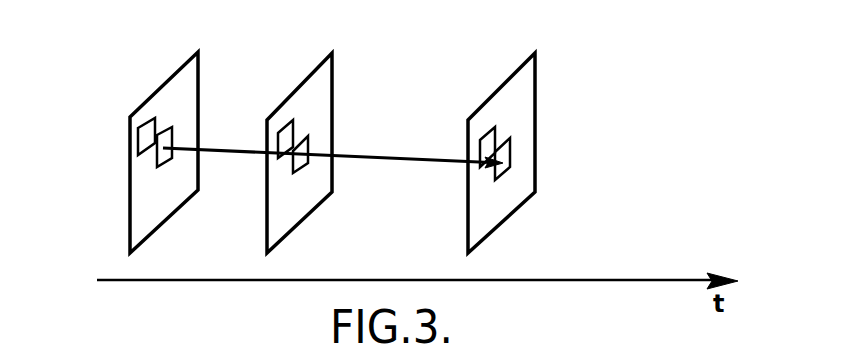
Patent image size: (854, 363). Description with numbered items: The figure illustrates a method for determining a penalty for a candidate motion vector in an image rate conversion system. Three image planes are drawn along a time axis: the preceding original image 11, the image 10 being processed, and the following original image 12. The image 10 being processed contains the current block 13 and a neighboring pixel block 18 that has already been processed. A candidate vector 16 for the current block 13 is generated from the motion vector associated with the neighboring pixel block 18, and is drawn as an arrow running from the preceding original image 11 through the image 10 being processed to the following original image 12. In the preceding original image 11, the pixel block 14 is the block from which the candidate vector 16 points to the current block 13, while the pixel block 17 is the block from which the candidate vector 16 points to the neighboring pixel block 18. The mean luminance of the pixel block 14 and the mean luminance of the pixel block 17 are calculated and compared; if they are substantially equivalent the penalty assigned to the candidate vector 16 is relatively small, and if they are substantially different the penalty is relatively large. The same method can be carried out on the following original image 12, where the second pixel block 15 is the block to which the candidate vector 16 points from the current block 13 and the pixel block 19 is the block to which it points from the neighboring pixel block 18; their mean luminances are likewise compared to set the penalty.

The image being processed 10 is at (295, 85).
The preceding original image 11 is at (160, 88).
The following original image 12 is at (503, 82).
The current block 13 is at (308, 145).
The first pixel block 14 is at (157, 162).
The second pixel block 15 is at (508, 148).
The candidate vector 16 is at (392, 158).
The pixel block 17 is at (147, 137).
The neighboring pixel block 18 is at (278, 133).
The pixel block 19 is at (487, 142).